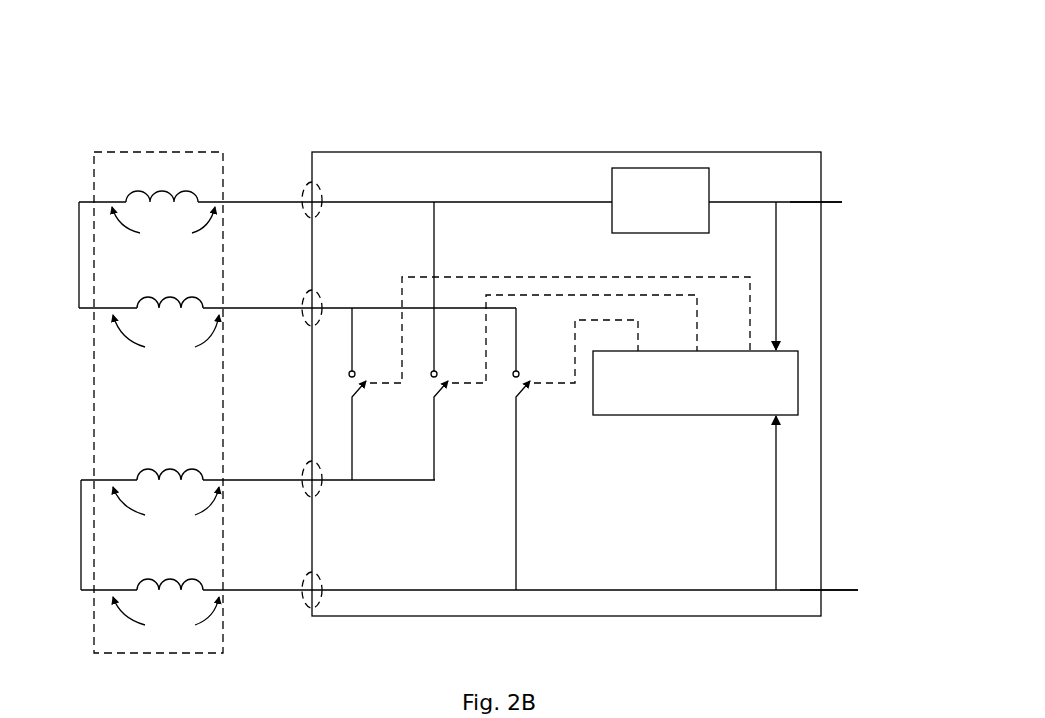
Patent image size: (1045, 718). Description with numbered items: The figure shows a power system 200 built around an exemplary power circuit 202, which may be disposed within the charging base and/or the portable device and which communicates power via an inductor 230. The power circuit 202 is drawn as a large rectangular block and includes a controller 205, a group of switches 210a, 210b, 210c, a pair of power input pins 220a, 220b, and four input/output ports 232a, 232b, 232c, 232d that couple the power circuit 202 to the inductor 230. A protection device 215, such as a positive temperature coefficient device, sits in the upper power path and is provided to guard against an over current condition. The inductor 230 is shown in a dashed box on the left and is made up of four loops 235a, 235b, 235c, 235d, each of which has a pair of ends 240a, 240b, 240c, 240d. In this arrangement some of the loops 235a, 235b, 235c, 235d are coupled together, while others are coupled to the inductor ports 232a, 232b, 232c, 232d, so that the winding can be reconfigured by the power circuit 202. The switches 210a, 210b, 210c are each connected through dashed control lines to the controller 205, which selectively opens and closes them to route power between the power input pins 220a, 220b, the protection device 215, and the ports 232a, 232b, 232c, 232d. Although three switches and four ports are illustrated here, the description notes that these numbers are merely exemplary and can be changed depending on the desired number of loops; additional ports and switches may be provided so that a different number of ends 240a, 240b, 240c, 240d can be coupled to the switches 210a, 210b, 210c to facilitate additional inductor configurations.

The power system 200 is at (190, 62).
The power circuit 202 is at (388, 152).
The controller 205 is at (687, 415).
The switch 210a is at (370, 400).
The switch 210b is at (450, 400).
The switch 210c is at (536, 400).
The protection device 215 is at (660, 168).
The power input pin 220a is at (825, 200).
The power input pin 220b is at (837, 588).
The inductor 230 is at (112, 152).
The input/output port 232a is at (306, 185).
The input/output port 232b is at (306, 292).
The input/output port 232c is at (307, 461).
The input/output port 232d is at (307, 572).
The loop 235a is at (162, 182).
The loop 235b is at (170, 288).
The loop 235c is at (170, 462).
The loop 235d is at (170, 568).
The end 240a is at (163, 227).
The end 240b is at (166, 338).
The end 240c is at (166, 508).
The end 240d is at (166, 618).